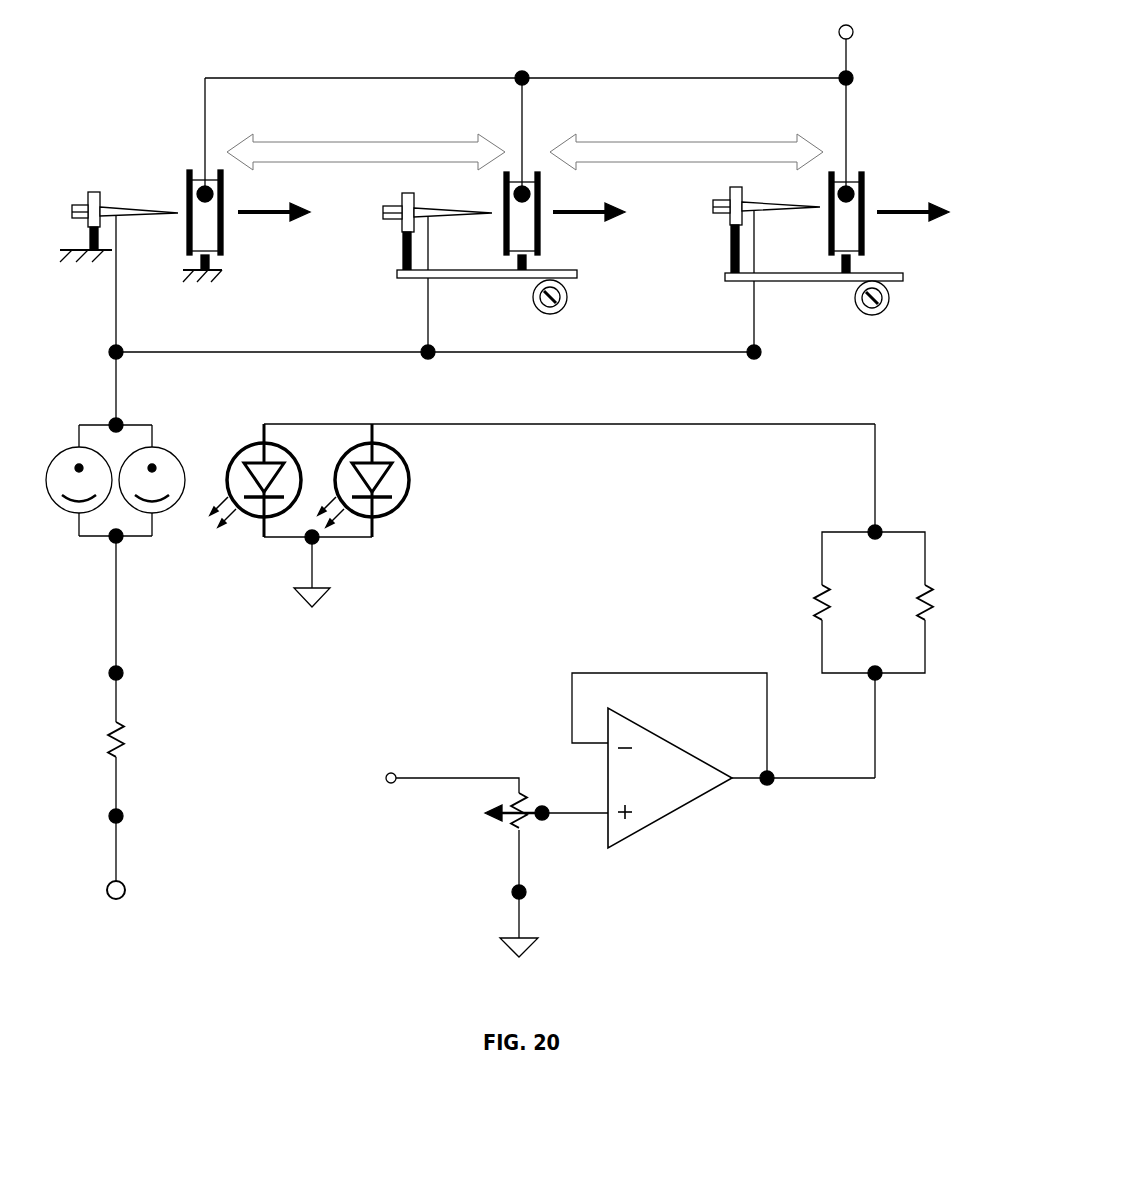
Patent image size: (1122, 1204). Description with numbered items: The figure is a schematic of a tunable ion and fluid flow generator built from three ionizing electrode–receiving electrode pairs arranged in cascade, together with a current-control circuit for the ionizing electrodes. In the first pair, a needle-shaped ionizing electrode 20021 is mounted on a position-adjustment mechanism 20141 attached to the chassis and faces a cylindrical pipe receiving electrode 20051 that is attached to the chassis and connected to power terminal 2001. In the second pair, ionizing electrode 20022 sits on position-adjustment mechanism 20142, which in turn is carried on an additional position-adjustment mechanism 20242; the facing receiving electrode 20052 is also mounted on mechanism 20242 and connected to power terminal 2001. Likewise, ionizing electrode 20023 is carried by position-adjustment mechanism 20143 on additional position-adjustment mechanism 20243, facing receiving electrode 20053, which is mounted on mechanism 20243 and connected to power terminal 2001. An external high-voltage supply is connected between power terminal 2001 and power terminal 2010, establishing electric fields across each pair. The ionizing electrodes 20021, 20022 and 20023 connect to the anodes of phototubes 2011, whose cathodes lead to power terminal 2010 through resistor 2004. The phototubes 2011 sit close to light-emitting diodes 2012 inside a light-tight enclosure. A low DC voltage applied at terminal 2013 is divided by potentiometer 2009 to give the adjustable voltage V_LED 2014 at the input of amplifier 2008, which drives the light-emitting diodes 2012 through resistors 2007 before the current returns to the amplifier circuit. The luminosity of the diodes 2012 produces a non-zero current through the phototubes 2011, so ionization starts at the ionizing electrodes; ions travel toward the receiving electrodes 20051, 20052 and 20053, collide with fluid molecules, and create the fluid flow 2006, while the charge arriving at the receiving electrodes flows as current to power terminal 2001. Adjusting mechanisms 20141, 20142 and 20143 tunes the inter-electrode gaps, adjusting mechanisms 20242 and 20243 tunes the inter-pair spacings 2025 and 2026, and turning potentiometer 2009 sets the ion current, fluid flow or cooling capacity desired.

The power terminal 2001 is at (838, 30).
The position-adjustment mechanism 20141 is at (94, 190).
The position-adjustment mechanism 20142 is at (402, 193).
The position-adjustment mechanism 20143 is at (730, 192).
The ionizing electrode 20021 is at (172, 210).
The ionizing electrode 20022 is at (478, 185).
The ionizing electrode 20023 is at (808, 188).
The inter-pair spacing 2025 is at (398, 138).
The inter-pair spacing 2026 is at (718, 136).
The fluid flow 2006 is at (278, 216).
The receiving electrode 20051 is at (212, 246).
The receiving electrode 20052 is at (514, 244).
The receiving electrode 20053 is at (840, 245).
The additional position-adjustment mechanism 20242 is at (577, 276).
The additional position-adjustment mechanism 20243 is at (903, 277).
The phototube 2011 is at (160, 450).
The light-emitting diode 2012 is at (410, 483).
The resistor 2007 is at (917, 608).
The amplifier 2008 is at (665, 815).
The terminal 2013 is at (391, 772).
The potentiometer 2009 is at (510, 820).
The adjustable voltage V_LED 2014 is at (545, 821).
The resistor 2004 is at (125, 752).
The power terminal 2010 is at (124, 882).